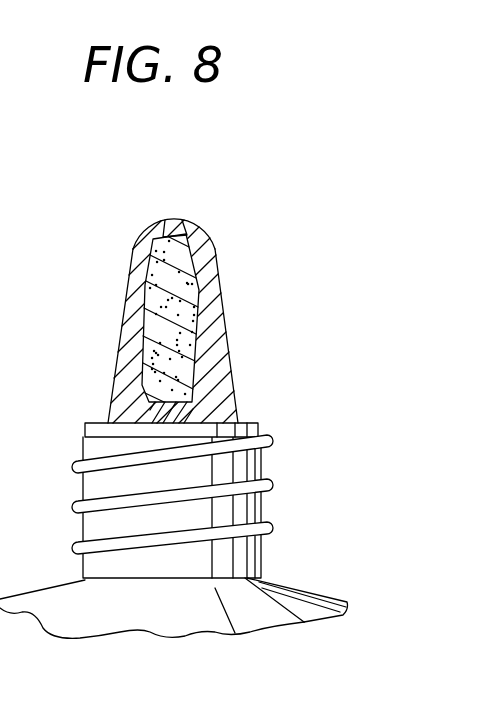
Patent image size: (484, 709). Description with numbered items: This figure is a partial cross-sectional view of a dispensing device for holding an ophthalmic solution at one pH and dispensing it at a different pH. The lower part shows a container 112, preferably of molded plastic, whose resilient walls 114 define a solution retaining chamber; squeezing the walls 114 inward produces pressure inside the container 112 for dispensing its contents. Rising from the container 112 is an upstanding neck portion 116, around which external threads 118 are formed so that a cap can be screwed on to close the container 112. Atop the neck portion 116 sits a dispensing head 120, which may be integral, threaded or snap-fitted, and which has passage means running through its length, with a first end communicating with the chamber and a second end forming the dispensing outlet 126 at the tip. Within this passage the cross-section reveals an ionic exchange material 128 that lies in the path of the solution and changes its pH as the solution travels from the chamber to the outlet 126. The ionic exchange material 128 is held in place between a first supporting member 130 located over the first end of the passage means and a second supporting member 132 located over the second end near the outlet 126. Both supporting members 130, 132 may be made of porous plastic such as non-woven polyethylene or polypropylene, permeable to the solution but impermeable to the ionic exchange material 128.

The container 112 is at (307, 578).
The resilient walls 114 is at (62, 595).
The neck portion 116 is at (85, 437).
The external threads 118 is at (262, 483).
The dispensing head 120 is at (222, 343).
The dispensing outlet 126 is at (173, 218).
The ionic exchange material 128 is at (213, 283).
The first supporting member 130 is at (138, 397).
The second supporting member 132 is at (203, 231).